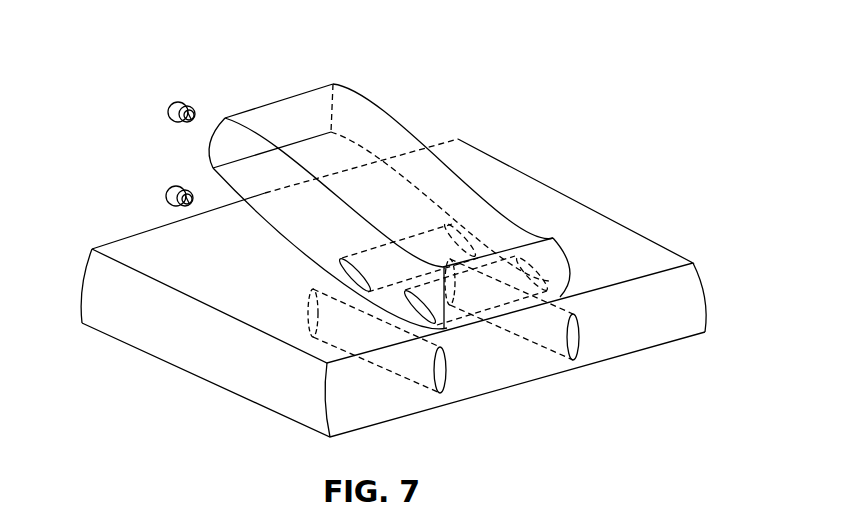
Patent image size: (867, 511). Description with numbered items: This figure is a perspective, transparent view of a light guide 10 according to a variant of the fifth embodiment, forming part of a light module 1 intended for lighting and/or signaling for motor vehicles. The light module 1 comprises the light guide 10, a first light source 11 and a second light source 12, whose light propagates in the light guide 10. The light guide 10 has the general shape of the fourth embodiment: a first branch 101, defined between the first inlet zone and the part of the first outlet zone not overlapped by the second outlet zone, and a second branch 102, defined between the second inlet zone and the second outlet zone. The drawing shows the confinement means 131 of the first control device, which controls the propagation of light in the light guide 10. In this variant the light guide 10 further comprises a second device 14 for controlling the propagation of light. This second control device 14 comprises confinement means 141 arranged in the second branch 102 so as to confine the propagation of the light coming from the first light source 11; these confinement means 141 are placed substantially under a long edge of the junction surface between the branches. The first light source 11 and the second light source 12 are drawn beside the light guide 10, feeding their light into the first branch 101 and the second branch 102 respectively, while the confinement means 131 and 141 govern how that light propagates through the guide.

The light module 1 is at (94, 121).
The light guide 10 is at (501, 119).
The first light source 11 is at (184, 81).
The second light source 12 is at (150, 193).
The first branch 101 is at (290, 118).
The second branch 102 is at (247, 372).
The confinement means 131 is at (450, 256).
The second device for controlling the propagation of light 14 is at (447, 372).
The confinement means 141 is at (571, 340).